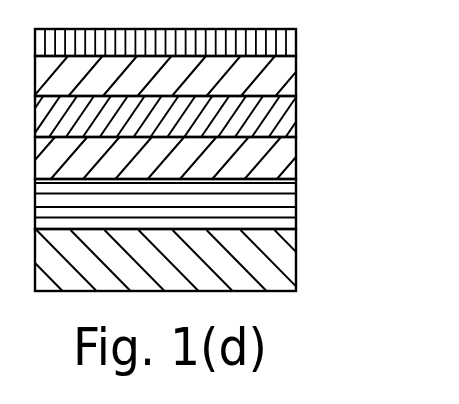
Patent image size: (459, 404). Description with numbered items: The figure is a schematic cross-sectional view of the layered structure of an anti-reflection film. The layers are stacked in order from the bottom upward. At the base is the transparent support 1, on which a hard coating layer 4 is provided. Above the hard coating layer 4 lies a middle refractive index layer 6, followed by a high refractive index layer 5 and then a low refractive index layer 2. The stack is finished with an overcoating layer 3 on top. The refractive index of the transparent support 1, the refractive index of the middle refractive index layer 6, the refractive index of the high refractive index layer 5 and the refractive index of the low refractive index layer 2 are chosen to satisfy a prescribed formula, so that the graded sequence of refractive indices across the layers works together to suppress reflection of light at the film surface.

The transparent support 1 is at (245, 263).
The low refractive index layer 2 is at (260, 82).
The overcoating layer 3 is at (270, 45).
The hard coating layer 4 is at (245, 217).
The high refractive index layer 5 is at (260, 117).
The middle refractive index layer 6 is at (250, 161).